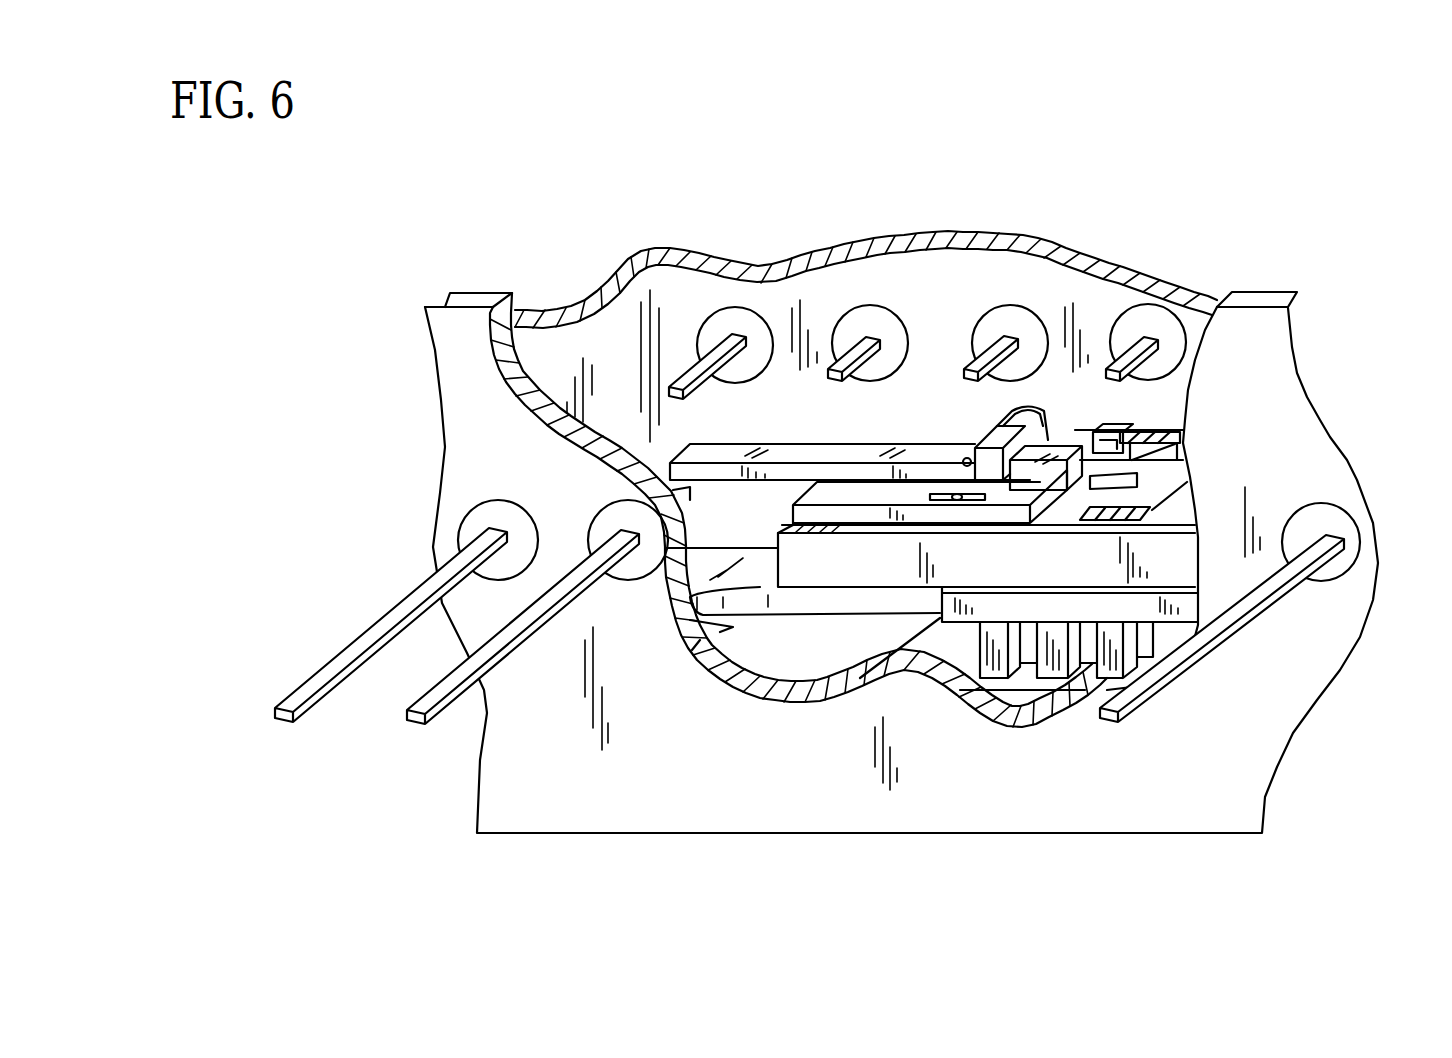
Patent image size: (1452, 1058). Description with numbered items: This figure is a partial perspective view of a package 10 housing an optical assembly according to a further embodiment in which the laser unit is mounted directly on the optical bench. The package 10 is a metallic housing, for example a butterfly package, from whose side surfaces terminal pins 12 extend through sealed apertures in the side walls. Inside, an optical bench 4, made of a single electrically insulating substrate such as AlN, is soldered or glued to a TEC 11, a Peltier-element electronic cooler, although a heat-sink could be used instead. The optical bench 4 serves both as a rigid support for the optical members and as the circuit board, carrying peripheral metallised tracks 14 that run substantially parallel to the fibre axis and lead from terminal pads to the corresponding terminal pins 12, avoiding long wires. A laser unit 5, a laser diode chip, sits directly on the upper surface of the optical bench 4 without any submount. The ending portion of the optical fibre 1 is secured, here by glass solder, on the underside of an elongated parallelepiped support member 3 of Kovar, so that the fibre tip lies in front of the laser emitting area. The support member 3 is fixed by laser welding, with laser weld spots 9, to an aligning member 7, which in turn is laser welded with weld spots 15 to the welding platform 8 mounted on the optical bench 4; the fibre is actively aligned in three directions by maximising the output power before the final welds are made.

The optical fibre 1 is at (643, 478).
The support member 3 is at (755, 440).
The optical bench 4 is at (1180, 556).
The laser unit 5 is at (1187, 441).
The aligning member 7 is at (1017, 405).
The welding platform 8 is at (955, 494).
The laser weld spots 9 is at (965, 447).
The package 10 is at (413, 319).
The TEC 11 is at (1148, 612).
The terminal pins 12 is at (393, 608).
The metallised tracks 14 is at (837, 531).
The weld spots 15 is at (962, 461).